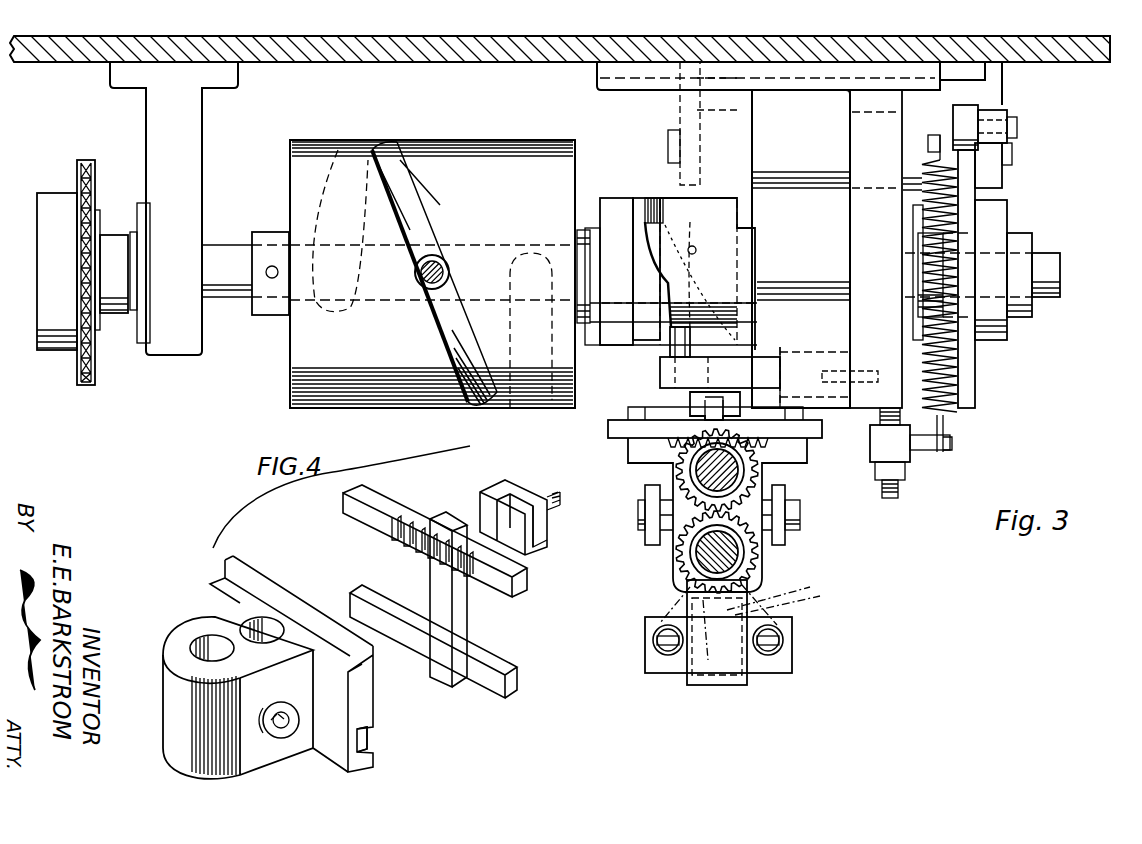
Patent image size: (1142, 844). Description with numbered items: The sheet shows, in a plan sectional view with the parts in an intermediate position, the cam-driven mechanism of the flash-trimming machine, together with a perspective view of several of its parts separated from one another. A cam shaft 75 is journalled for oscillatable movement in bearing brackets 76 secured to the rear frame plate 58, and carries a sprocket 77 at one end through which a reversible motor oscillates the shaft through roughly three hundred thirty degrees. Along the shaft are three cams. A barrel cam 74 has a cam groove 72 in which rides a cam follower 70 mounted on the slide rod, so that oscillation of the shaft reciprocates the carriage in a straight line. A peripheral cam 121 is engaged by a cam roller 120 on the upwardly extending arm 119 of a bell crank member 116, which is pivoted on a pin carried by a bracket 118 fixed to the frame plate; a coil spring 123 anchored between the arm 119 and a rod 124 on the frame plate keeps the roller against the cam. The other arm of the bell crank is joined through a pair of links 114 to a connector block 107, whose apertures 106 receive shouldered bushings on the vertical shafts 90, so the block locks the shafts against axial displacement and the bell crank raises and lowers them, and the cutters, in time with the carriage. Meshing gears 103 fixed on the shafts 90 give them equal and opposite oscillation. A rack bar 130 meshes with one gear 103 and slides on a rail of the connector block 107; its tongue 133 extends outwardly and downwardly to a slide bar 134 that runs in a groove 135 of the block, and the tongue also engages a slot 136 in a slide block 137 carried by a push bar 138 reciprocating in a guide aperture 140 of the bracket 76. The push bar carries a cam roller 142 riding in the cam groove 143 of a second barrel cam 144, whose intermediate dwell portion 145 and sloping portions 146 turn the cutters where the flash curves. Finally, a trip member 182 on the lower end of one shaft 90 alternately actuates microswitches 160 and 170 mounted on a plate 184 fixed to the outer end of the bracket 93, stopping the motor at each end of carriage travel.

In FIG. 3, the frame plate 58 is at (825, 40).
In FIG. 3, the cam follower 70 is at (435, 253).
In FIG. 3, the cam groove 72 is at (365, 147).
In FIG. 3, the barrel cam 74 is at (445, 155).
In FIG. 3, the cam shaft 75 is at (215, 255).
In FIG. 3, the bearing bracket 76 is at (190, 143).
In FIG. 3, the sprocket 77 is at (90, 387).
In FIG. 3, the vertical shaft 90 is at (705, 470).
In FIG. 3, the bracket 93 is at (743, 102).
In FIG. 3, the gear 103 is at (680, 452).
In FIG. 4, the aperture 106 is at (207, 647).
In FIG. 3, the connector block 107 is at (752, 512).
In FIG. 4, the connector block 107 is at (175, 697).
In FIG. 3, the link 114 is at (647, 543).
In FIG. 3, the bell crank member 116 is at (779, 145).
In FIG. 3, the bracket 118 is at (995, 177).
In FIG. 3, the arm of the bell crank 119 is at (1002, 113).
In FIG. 3, the cam roller 120 is at (968, 110).
In FIG. 3, the peripheral cam 121 is at (968, 215).
In FIG. 3, the coil spring 123 is at (957, 397).
In FIG. 3, the rod 124 is at (927, 455).
In FIG. 3, the rack bar 130 is at (612, 433).
In FIG. 4, the rack bar 130 is at (407, 545).
In FIG. 3, the tongue 133 is at (718, 410).
In FIG. 4, the tongue 133 is at (458, 602).
In FIG. 4, the slide bar 134 is at (480, 680).
In FIG. 4, the groove 135 is at (367, 735).
In FIG. 4, the slot 136 is at (503, 505).
In FIG. 3, the slide block 137 is at (687, 402).
In FIG. 4, the slide block 137 is at (535, 540).
In FIG. 3, the push bar 138 is at (667, 370).
In FIG. 3, the guide aperture 140 is at (843, 397).
In FIG. 3, the cam roller 142 is at (678, 347).
In FIG. 3, the cam groove 143 is at (663, 213).
In FIG. 3, the barrel cam 144 is at (620, 210).
In FIG. 3, the dwell portion 145 is at (737, 262).
In FIG. 3, the sloping portion 146 is at (692, 248).
In FIG. 3, the microswitch 160 is at (787, 650).
In FIG. 3, the microswitch 170 is at (648, 647).
In FIG. 3, the trip member 182 is at (753, 619).
In FIG. 3, the plate 184 is at (713, 683).